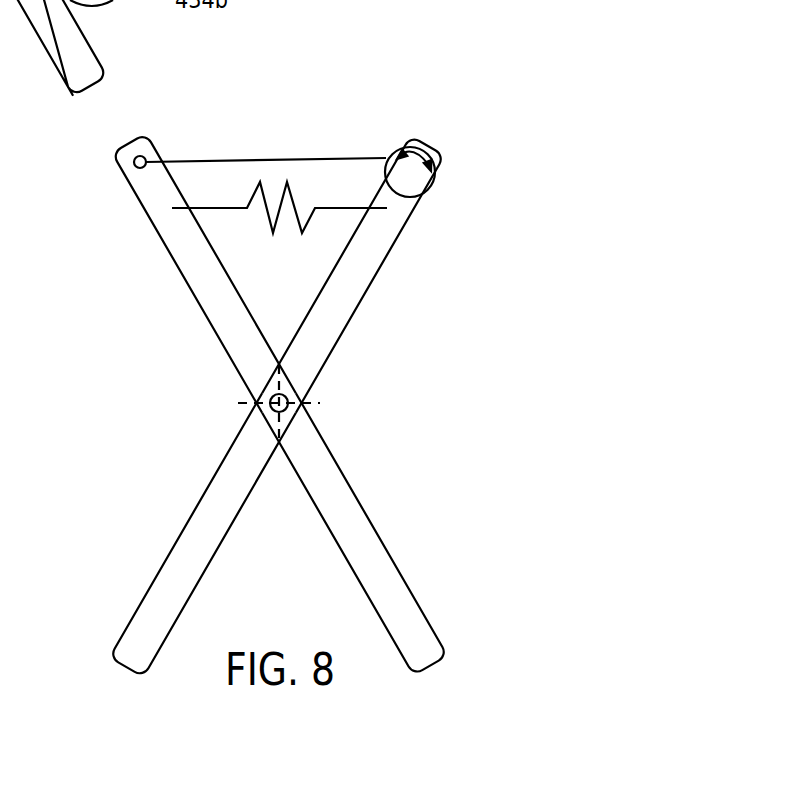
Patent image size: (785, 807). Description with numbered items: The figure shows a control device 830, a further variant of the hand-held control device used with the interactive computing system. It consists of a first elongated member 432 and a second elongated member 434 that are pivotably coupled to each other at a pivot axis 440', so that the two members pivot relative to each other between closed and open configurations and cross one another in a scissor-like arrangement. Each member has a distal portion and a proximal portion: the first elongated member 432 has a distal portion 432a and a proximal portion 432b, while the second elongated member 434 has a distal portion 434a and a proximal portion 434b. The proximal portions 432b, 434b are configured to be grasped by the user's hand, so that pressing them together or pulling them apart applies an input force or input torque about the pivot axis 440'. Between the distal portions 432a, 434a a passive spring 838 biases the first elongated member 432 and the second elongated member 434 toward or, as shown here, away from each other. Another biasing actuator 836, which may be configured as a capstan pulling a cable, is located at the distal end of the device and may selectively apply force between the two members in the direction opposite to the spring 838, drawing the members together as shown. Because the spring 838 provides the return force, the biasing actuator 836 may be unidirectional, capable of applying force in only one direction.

The control device 830 is at (421, 79).
The biasing actuator 836 is at (457, 120).
The passive spring 838 is at (340, 208).
The first elongated member 432 is at (272, 406).
The distal portion of the first elongated member 432a is at (357, 310).
The proximal portion of the first elongated member 432b is at (155, 578).
The second elongated member 434 is at (305, 404).
The distal portion of the second elongated member 434a is at (168, 250).
The proximal portion of the second elongated member 434b is at (409, 587).
The pivot axis 440' is at (329, 385).